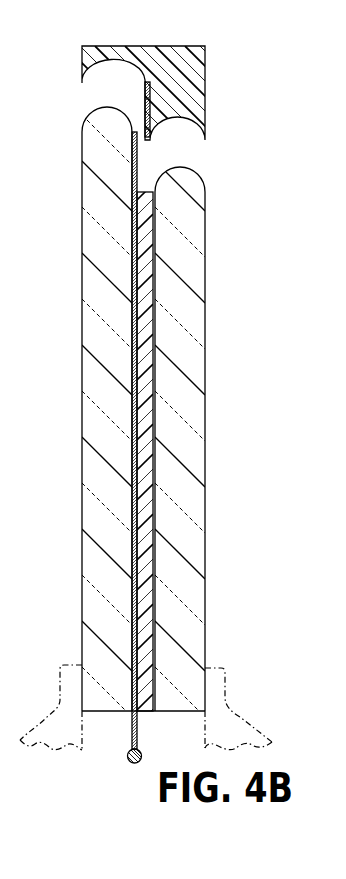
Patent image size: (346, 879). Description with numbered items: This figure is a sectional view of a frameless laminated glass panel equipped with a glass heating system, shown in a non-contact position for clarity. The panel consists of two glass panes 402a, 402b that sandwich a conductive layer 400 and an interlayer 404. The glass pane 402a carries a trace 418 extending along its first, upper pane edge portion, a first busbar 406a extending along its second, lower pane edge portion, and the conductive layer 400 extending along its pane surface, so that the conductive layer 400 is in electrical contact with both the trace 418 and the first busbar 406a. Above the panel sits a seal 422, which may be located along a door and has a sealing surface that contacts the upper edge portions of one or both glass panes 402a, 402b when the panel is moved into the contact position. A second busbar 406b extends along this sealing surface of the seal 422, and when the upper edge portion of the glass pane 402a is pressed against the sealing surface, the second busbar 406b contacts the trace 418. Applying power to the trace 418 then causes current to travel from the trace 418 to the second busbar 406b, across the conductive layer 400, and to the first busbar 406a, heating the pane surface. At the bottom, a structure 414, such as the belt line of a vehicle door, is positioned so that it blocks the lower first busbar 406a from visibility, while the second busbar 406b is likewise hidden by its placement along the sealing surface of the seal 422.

The conductive layer 400 is at (132, 226).
The glass pane 402a is at (82, 412).
The glass pane 402b is at (205, 430).
The interlayer 404 is at (147, 297).
The first busbar 406a is at (131, 712).
The second busbar 406b is at (152, 102).
The structure 414 is at (233, 712).
The trace 418 is at (132, 135).
The seal 422 is at (170, 35).